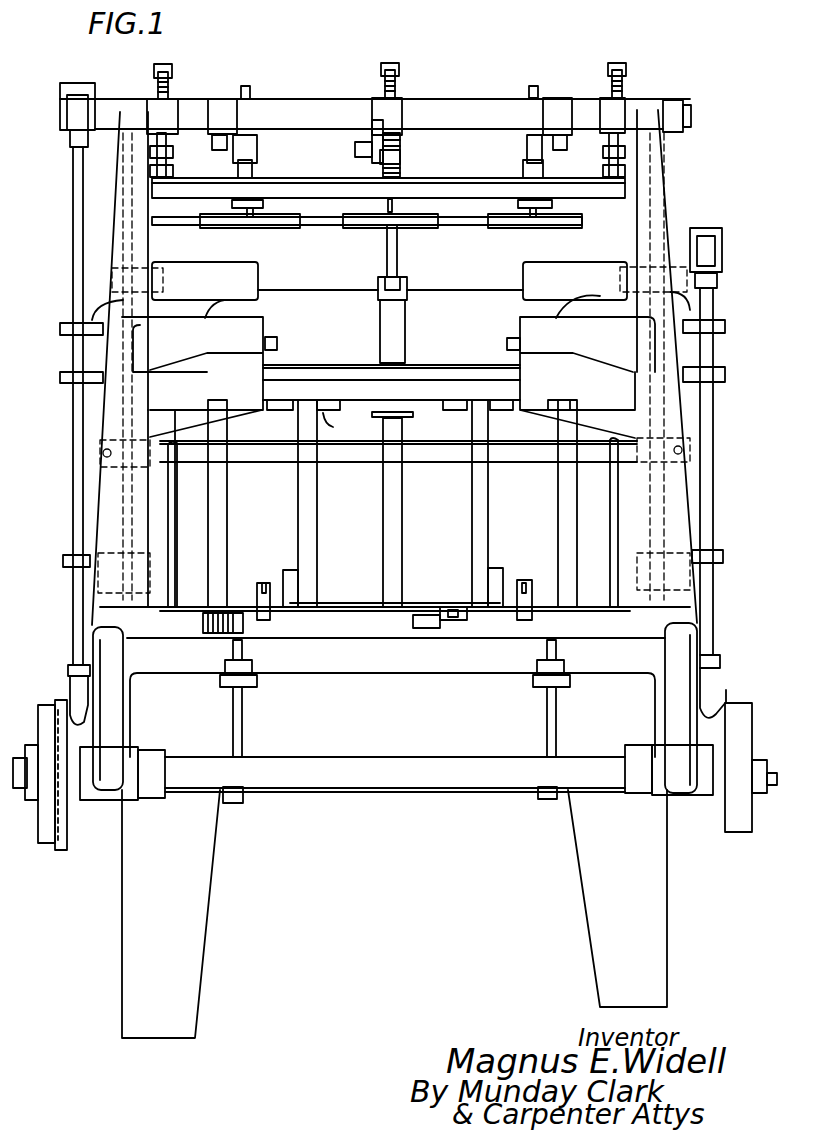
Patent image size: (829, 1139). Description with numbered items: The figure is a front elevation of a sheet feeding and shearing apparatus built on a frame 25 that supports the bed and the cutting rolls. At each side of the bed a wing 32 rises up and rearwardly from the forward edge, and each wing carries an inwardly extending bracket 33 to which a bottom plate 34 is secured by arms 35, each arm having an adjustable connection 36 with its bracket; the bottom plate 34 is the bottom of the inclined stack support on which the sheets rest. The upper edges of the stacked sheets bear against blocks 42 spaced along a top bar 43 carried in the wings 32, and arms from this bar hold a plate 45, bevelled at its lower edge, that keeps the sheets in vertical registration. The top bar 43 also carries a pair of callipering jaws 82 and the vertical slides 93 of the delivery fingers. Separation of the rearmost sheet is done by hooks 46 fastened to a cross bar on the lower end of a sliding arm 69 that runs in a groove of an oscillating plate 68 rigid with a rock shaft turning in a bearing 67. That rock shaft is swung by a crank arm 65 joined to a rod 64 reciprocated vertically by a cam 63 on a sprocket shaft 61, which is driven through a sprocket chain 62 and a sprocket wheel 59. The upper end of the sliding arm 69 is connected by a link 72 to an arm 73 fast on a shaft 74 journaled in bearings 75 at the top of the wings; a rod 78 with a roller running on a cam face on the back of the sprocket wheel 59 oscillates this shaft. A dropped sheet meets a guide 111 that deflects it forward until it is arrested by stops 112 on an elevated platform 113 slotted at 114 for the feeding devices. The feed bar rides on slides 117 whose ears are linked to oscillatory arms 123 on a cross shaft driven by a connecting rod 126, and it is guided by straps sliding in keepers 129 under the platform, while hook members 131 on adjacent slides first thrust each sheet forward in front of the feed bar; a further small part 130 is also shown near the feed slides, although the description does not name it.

The frame 25 is at (207, 882).
The wing 32 is at (110, 515).
The bracket 33 is at (604, 340).
The bottom plate 34 is at (424, 400).
The arm 35 is at (270, 362).
The adjustable connection 36 is at (507, 346).
The block 42 is at (340, 226).
The top bar 43 is at (633, 188).
The plate 45 is at (302, 190).
The hook 46 is at (326, 414).
The sprocket wheel 59 is at (45, 705).
The sprocket shaft 61 is at (358, 780).
The sprocket chain 62 is at (62, 848).
The cam 63 is at (738, 716).
The rod 64 is at (713, 592).
The crank arm 65 is at (710, 236).
The bearing 67 is at (710, 277).
The oscillating plate 68 is at (502, 300).
The sliding arm 69 is at (400, 310).
The link 72 is at (387, 247).
The arm 73 is at (372, 137).
The shaft 74 is at (294, 122).
The bearing 75 is at (115, 112).
The rod 78 is at (80, 452).
The callipering jaws 82 is at (255, 227).
The vertical slide 93 is at (258, 172).
The guide 111 is at (562, 492).
The stop 112 is at (305, 578).
The elevated platform 113 is at (415, 602).
The slot 114 is at (252, 600).
The slide 117 is at (245, 648).
The oscillatory arm 123 is at (244, 712).
The connecting rod 126 is at (458, 622).
The keeper 129 is at (430, 626).
The clamp 130 is at (228, 634).
The hook member 131 is at (267, 585).